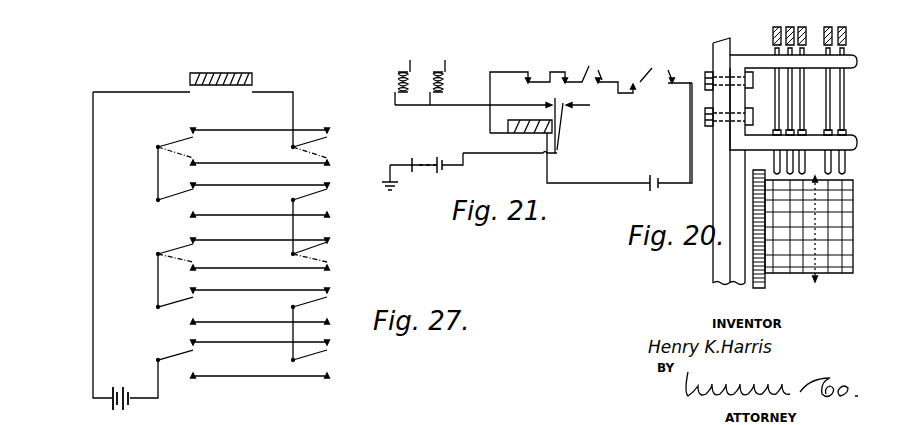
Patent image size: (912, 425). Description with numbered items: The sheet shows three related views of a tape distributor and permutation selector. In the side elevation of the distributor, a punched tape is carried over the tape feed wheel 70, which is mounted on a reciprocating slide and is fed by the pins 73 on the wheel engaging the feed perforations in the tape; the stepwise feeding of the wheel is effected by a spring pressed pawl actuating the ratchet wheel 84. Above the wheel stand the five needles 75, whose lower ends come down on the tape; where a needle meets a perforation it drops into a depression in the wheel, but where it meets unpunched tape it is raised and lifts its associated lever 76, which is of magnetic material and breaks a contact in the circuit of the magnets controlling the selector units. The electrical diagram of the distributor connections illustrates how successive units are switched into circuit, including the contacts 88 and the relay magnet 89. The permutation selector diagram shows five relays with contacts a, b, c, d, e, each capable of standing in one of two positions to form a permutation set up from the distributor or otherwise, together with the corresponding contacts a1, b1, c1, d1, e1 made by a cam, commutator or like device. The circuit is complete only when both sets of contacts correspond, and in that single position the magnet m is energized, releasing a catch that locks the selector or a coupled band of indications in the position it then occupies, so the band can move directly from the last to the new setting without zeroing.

In FIG. 27, the magnet m is at (252, 78).
In FIG. 27, the relay with contacts a is at (330, 150).
In FIG. 27, the corresponding contact a1 is at (195, 151).
In FIG. 27, the relay with contacts b is at (330, 208).
In FIG. 27, the corresponding contact b1 is at (196, 205).
In FIG. 27, the relay with contacts c is at (330, 252).
In FIG. 27, the corresponding contact c1 is at (209, 254).
In FIG. 27, the relay with contacts d is at (330, 310).
In FIG. 27, the corresponding contact d1 is at (192, 312).
In FIG. 27, the relay with contacts e is at (330, 362).
In FIG. 27, the corresponding contact e1 is at (193, 363).
In FIG. 21, the contacts 88 is at (598, 72).
In FIG. 21, the relay magnet 89 is at (560, 128).
In FIG. 20, the tape feed wheel 70 is at (853, 225).
In FIG. 20, the pins 73 is at (818, 178).
In FIG. 20, the needles 75 is at (778, 108).
In FIG. 20, the lever 76 is at (844, 31).
In FIG. 20, the ratchet wheel 84 is at (757, 253).